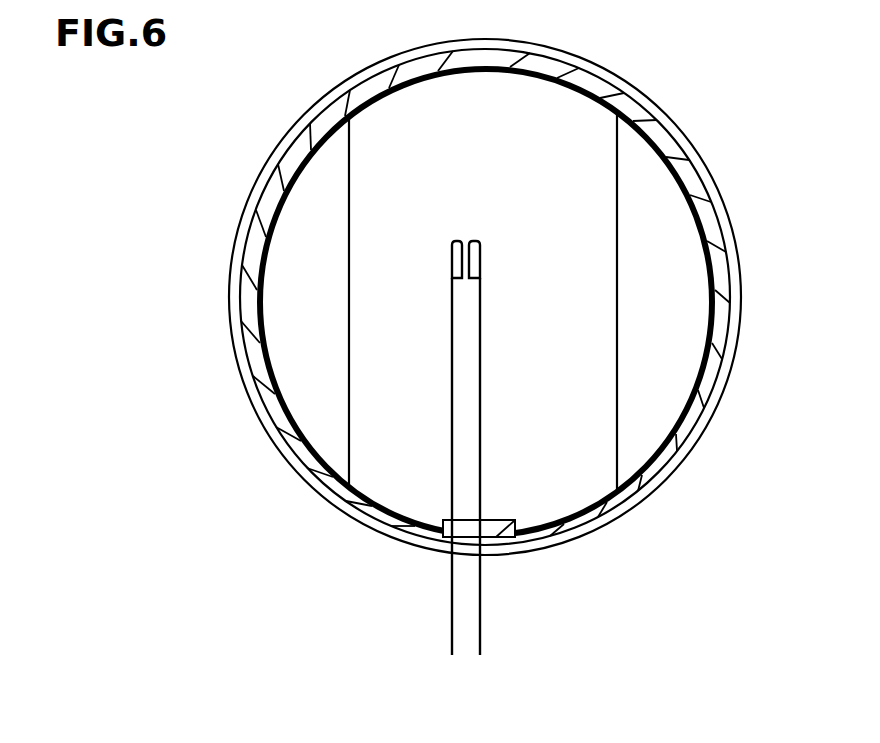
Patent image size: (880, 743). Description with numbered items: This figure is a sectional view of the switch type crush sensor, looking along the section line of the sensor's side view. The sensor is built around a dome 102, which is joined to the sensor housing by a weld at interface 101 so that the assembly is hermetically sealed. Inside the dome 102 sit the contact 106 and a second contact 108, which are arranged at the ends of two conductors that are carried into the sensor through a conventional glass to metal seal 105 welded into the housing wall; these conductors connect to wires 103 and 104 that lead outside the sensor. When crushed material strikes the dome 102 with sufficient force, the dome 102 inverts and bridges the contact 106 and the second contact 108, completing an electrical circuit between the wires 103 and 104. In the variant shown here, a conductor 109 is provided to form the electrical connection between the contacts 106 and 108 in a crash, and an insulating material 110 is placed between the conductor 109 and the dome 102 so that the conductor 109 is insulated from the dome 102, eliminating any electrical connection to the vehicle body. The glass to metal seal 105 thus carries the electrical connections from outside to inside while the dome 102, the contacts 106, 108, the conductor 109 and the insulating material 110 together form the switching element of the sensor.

The interface 101 is at (704, 434).
The dome 102 is at (329, 344).
The wire 103 is at (451, 586).
The wire 104 is at (482, 581).
The glass to metal seal 105 is at (474, 531).
The contact 106 is at (451, 360).
The second contact 108 is at (482, 353).
The conductor 109 is at (349, 239).
The insulating material 110 is at (608, 272).